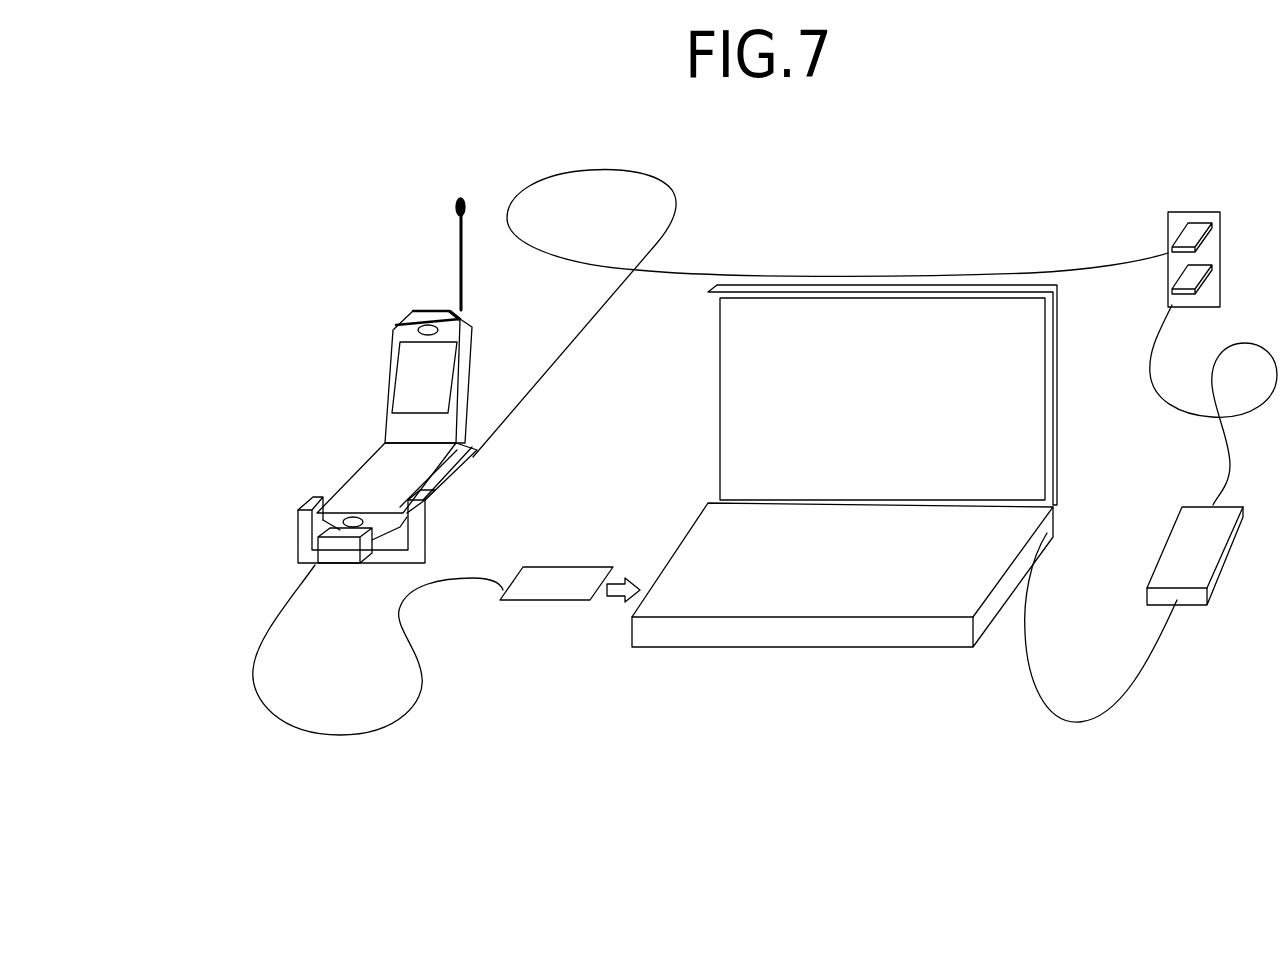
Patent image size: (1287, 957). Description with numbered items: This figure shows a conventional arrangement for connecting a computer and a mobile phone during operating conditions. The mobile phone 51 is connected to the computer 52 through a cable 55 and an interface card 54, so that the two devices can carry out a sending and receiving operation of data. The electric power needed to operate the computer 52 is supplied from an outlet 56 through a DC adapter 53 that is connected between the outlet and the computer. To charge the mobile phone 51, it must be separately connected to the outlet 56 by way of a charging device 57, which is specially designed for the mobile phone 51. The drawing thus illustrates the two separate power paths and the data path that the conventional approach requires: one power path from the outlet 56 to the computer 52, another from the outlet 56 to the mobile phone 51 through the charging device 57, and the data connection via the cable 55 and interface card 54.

The mobile phone 51 is at (398, 323).
The computer 52 is at (788, 647).
The DC adapter 53 is at (1198, 608).
The interface card 54 is at (545, 602).
The cable 55 is at (338, 737).
The outlet 56 is at (1168, 228).
The charging device 57 is at (475, 463).